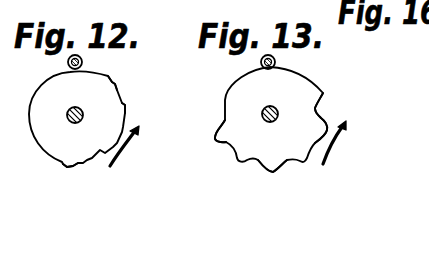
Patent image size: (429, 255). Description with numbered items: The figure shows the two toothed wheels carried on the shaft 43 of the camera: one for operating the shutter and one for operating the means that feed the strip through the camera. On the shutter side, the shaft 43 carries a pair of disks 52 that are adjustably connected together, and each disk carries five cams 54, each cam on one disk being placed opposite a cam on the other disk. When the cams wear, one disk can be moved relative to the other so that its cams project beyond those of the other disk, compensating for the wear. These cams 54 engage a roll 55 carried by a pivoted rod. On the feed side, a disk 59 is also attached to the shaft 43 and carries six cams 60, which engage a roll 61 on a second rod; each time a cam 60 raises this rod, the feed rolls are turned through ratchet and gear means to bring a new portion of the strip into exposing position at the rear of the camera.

In FIG. 12, the shaft 43 is at (70, 121).
In FIG. 13, the shaft 43 is at (263, 111).
In FIG. 12, the disks 52 is at (43, 116).
In FIG. 12, the cams 54 is at (115, 75).
In FIG. 12, the roll 55 is at (67, 62).
In FIG. 13, the disk 59 is at (300, 86).
In FIG. 13, the cams 60 is at (215, 143).
In FIG. 13, the roll 61 is at (261, 66).